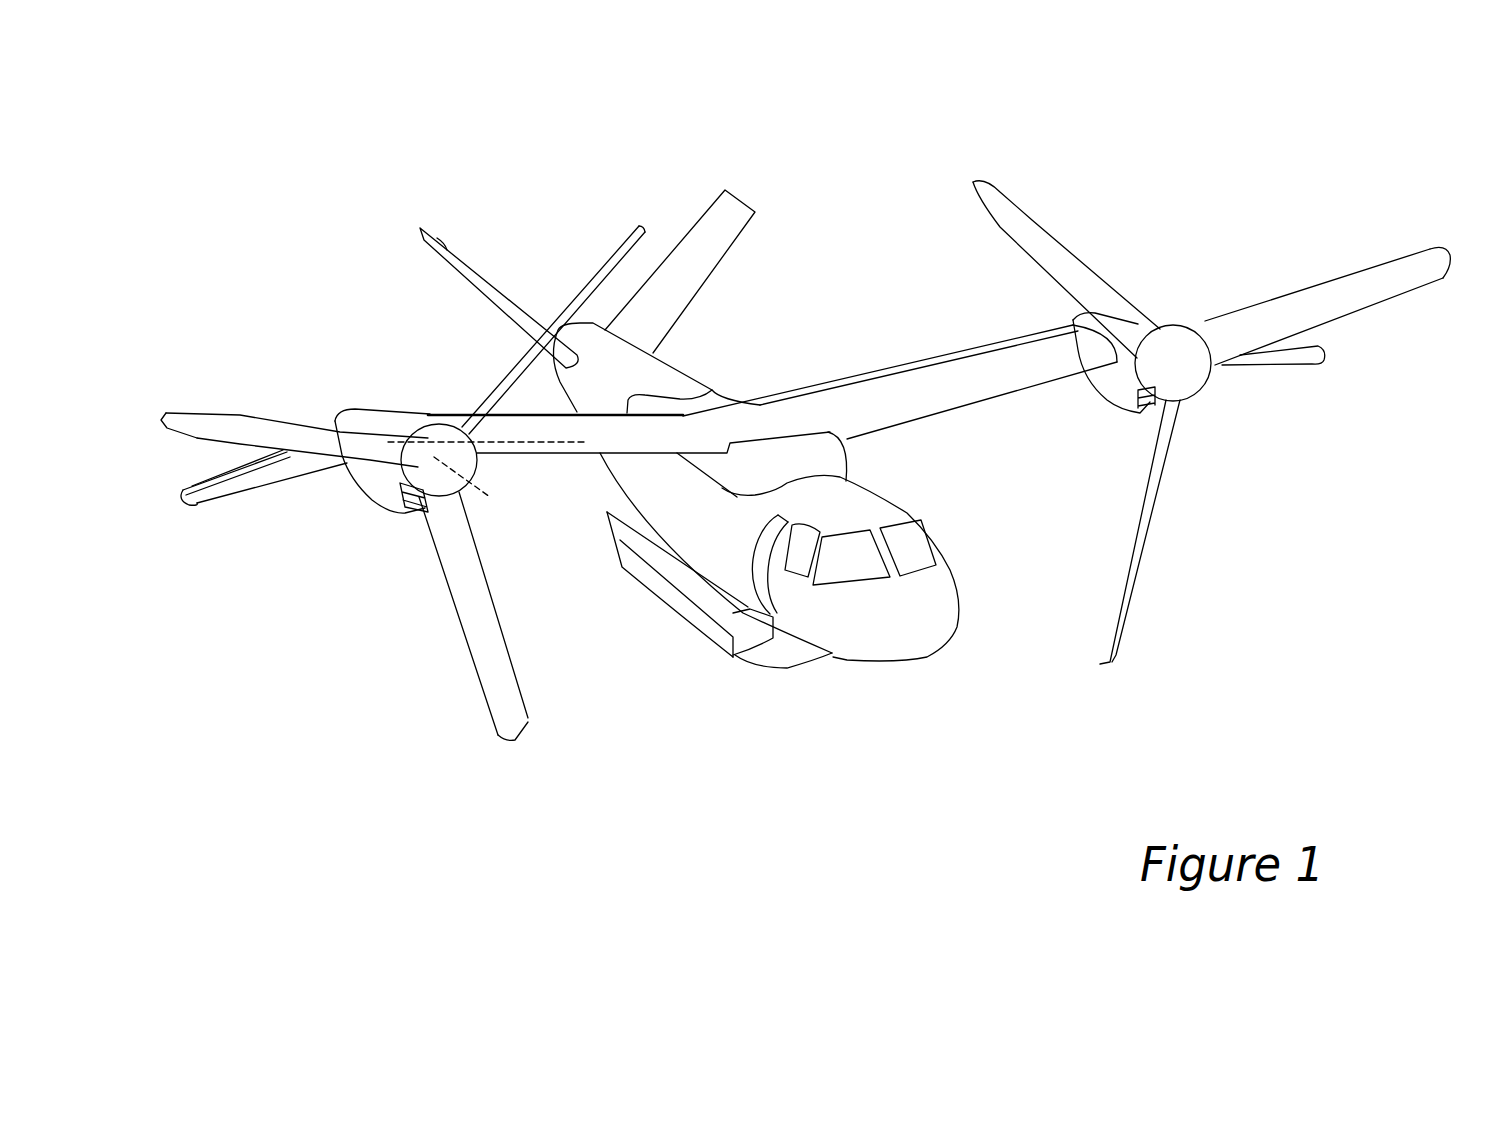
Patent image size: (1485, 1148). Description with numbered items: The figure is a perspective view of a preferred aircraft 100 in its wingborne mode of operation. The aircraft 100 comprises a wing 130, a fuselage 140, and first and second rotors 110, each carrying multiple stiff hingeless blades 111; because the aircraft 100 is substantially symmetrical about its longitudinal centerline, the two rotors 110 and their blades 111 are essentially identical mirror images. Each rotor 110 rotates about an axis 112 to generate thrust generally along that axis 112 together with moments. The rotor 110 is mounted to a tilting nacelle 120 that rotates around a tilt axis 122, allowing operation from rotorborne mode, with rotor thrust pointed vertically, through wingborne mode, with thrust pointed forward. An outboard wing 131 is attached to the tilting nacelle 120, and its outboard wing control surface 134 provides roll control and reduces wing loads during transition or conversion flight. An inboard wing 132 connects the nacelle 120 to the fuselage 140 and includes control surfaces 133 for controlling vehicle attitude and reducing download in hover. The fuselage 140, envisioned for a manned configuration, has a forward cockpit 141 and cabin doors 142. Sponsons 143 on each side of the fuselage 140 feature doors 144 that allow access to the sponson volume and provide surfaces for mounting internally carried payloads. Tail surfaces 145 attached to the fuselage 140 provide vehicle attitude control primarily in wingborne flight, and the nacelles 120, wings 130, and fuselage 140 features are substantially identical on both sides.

The aircraft 100 is at (262, 170).
The rotor 110 is at (316, 624).
The blade 111 is at (228, 410).
The axis 112 is at (483, 492).
The tilting nacelle 120 is at (382, 503).
The tilt axis 122 is at (540, 452).
The wing 130 is at (845, 331).
The outboard wing 131 is at (223, 503).
The inboard wing 132 is at (642, 455).
The control surfaces 133 is at (600, 413).
The outboard wing control surface 134 is at (206, 476).
The fuselage 140 is at (695, 740).
The forward cockpit 141 is at (976, 580).
The cabin doors 142 is at (753, 553).
The sponson 143 is at (792, 672).
The doors 144 is at (673, 617).
The tail surfaces 145 is at (477, 264).